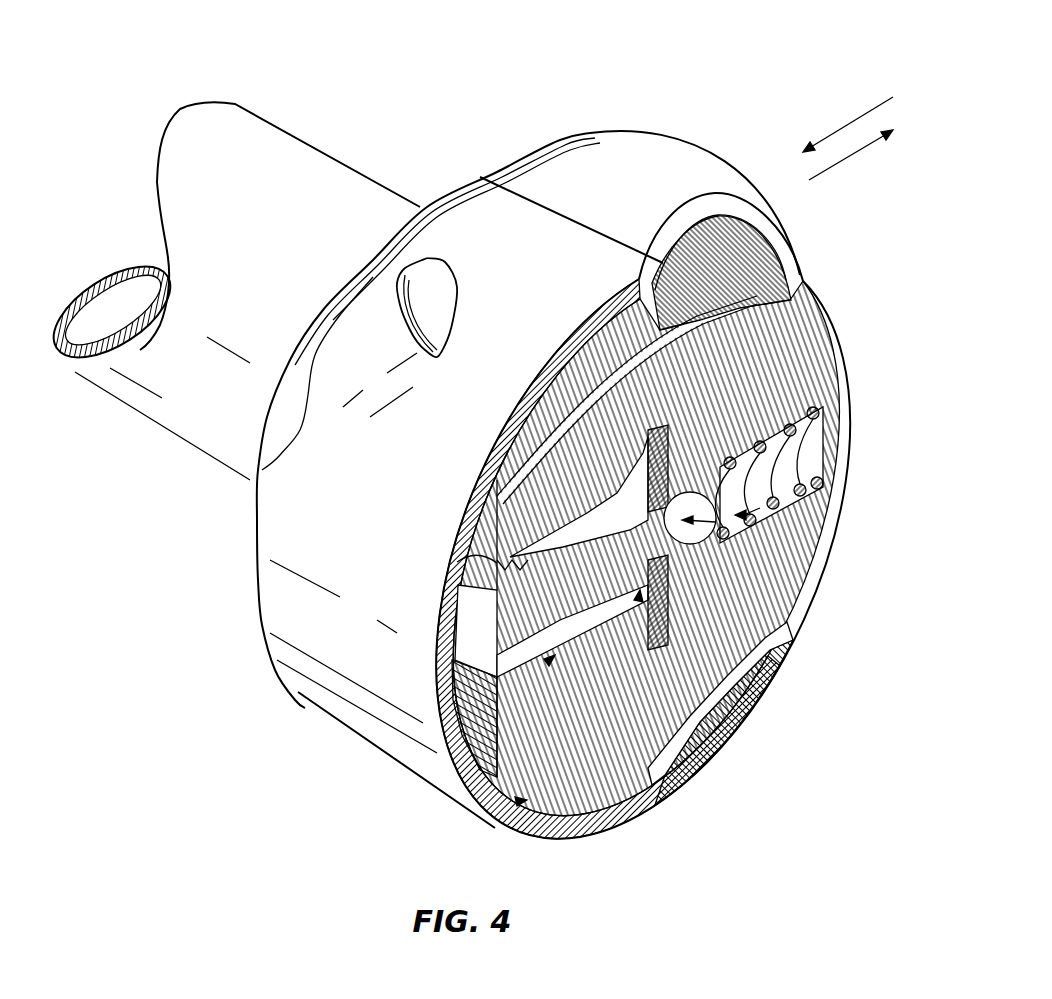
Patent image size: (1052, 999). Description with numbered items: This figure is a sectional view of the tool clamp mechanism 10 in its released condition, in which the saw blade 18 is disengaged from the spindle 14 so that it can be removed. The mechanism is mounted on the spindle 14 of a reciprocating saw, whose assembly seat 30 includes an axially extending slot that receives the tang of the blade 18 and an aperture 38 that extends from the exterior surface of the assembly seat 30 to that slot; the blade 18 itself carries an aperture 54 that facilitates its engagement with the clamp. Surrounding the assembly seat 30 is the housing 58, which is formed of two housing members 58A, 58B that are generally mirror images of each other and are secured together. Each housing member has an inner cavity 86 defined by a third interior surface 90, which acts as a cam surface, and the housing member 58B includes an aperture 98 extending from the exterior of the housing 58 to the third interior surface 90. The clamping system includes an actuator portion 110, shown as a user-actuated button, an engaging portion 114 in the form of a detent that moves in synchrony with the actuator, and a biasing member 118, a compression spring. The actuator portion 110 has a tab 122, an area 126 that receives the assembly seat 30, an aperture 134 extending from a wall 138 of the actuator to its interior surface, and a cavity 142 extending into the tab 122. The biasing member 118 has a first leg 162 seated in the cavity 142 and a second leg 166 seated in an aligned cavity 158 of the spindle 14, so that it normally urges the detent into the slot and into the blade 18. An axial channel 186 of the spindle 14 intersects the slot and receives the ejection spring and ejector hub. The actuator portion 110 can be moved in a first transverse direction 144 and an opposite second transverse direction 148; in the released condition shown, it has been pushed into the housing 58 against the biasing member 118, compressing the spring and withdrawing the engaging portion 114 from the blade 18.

The tool clamp mechanism 10 is at (722, 55).
The spindle 14 is at (298, 190).
The housing 58 is at (537, 170).
The housing member 58A is at (323, 630).
The housing member 58B is at (606, 150).
The actuator portion 110 is at (643, 248).
The first transverse direction 144 is at (850, 125).
The second transverse direction 148 is at (860, 152).
The axial channel 186 is at (735, 450).
The cavity 158 is at (787, 415).
The tab 122 is at (842, 363).
The cavity 142 is at (812, 440).
The first leg 162 is at (818, 468).
The biasing member 118 is at (760, 508).
The second leg 166 is at (668, 548).
The aperture 54 is at (700, 618).
The aperture 98 is at (795, 633).
The tool 18 is at (780, 672).
The aperture 38 is at (722, 735).
The assembly seat 30 is at (690, 762).
The aperture 134 is at (510, 560).
The wall 138 is at (480, 547).
The engaging portion 114 is at (497, 640).
The area 126 is at (493, 727).
The inner cavity 86 is at (498, 825).
The third interior surface 90 is at (565, 805).